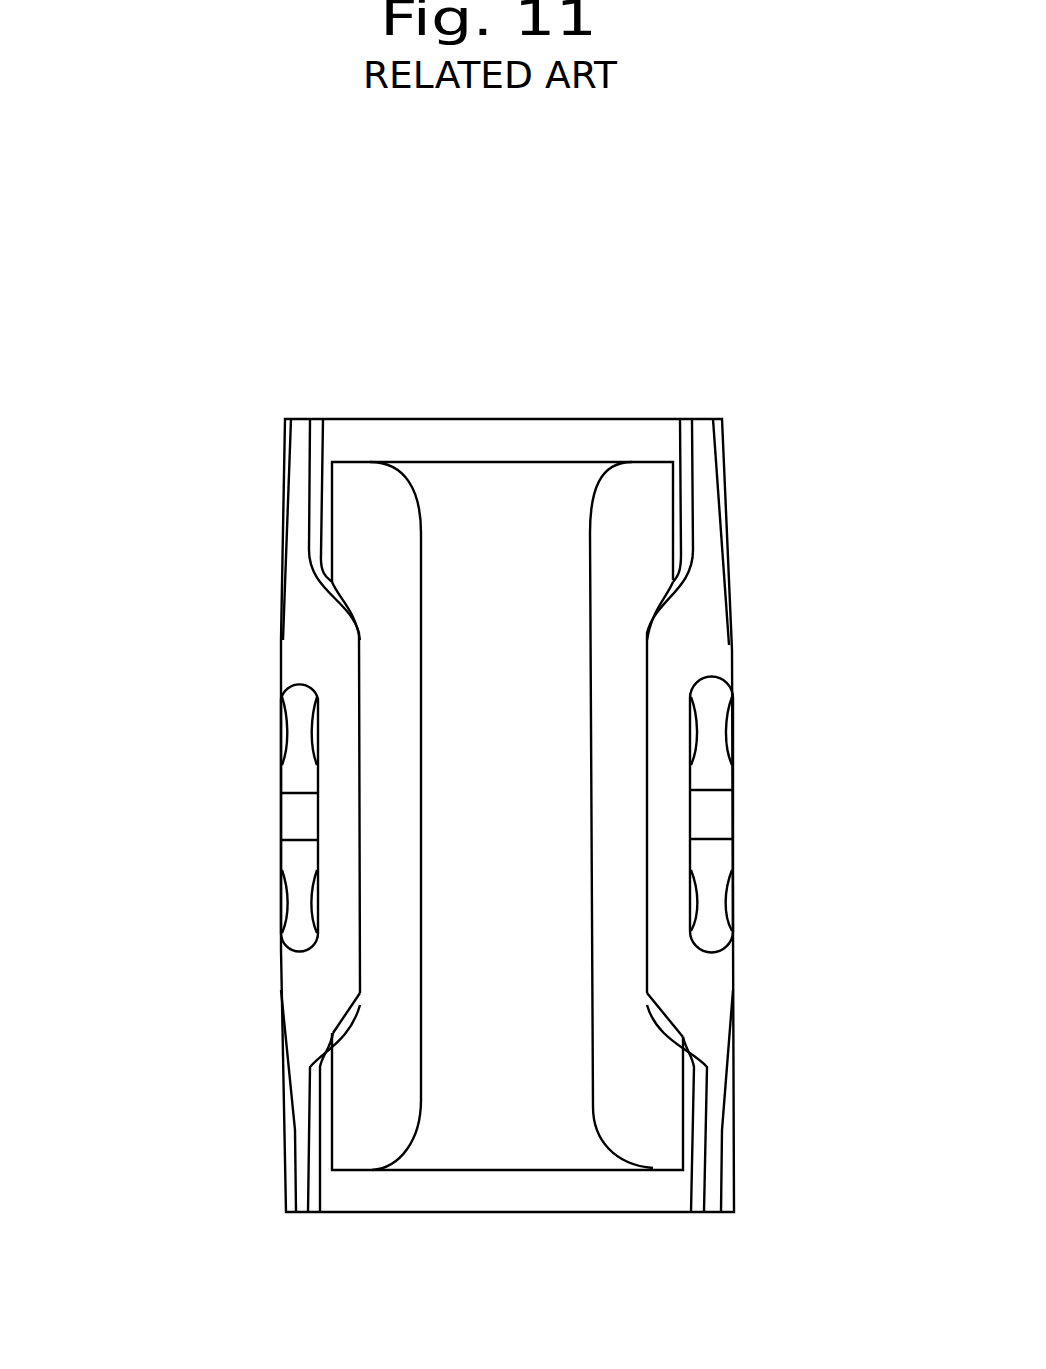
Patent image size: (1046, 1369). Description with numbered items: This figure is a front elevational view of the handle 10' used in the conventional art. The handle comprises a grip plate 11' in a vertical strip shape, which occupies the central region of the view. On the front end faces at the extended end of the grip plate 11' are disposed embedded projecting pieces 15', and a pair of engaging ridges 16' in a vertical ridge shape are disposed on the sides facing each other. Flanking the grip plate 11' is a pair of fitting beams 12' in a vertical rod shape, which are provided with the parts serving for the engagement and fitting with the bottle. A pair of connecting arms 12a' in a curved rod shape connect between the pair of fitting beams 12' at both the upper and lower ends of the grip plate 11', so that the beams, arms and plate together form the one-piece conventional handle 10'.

The motor (related art) 10' is at (507, 728).
The grip plate 11' is at (511, 897).
The fitting beams 12' is at (497, 815).
The connecting arms 12a' is at (511, 814).
The embedded projecting pieces 15' is at (495, 815).
The engaging ridges 16' is at (489, 814).